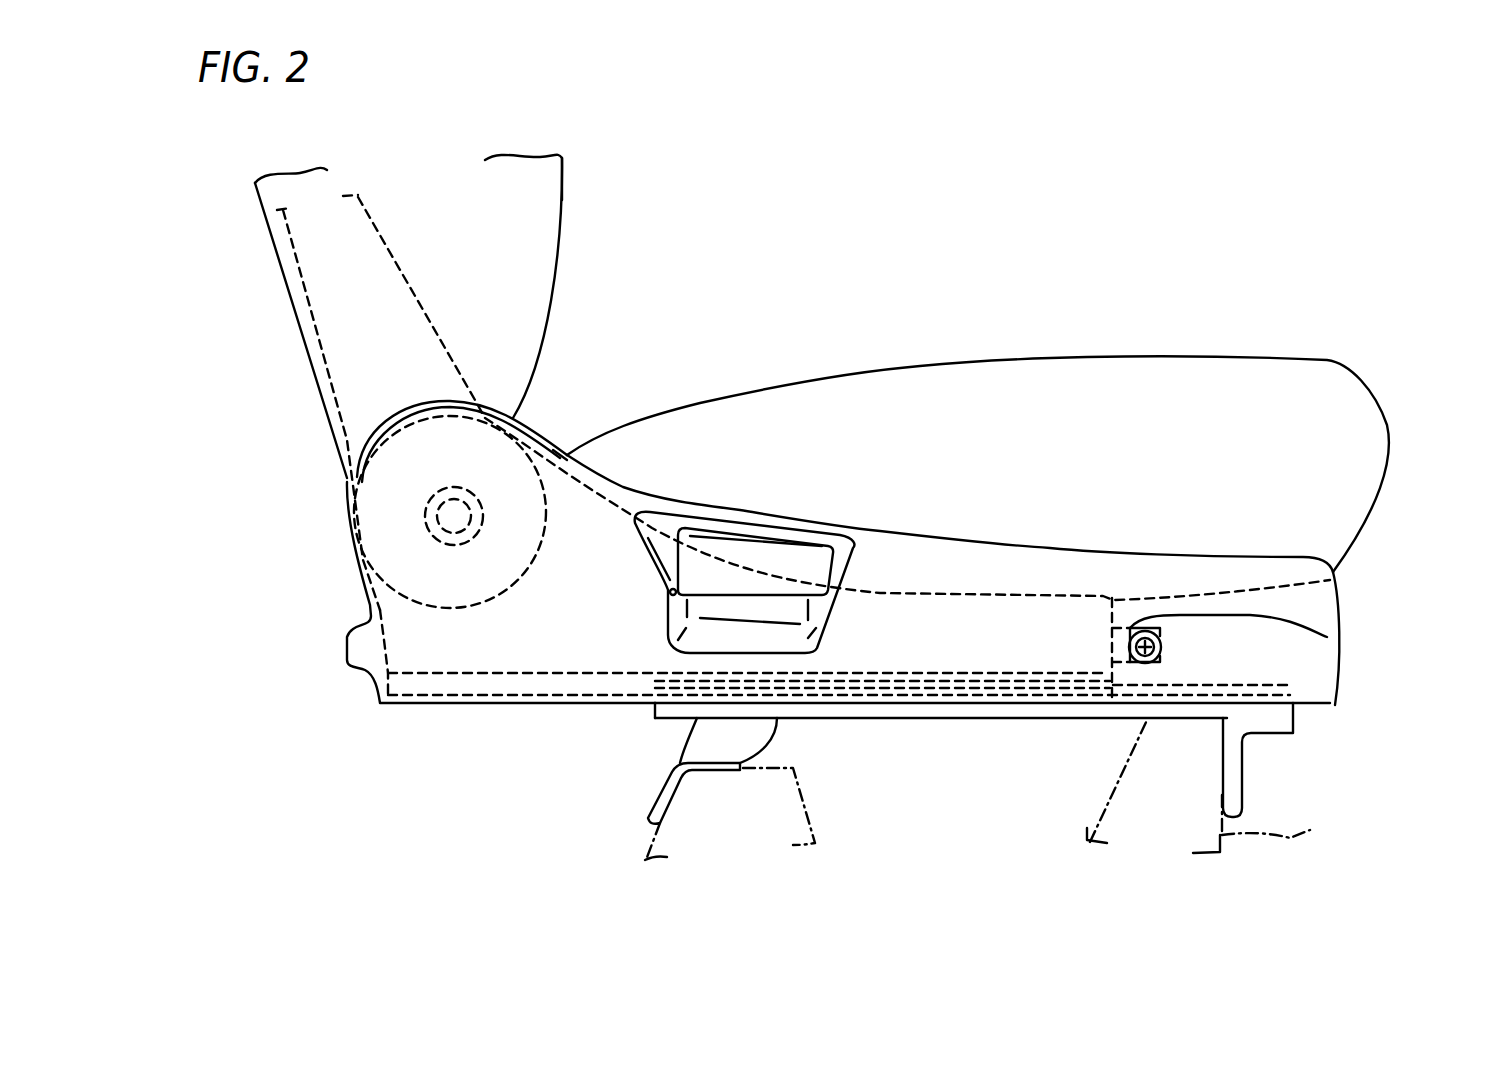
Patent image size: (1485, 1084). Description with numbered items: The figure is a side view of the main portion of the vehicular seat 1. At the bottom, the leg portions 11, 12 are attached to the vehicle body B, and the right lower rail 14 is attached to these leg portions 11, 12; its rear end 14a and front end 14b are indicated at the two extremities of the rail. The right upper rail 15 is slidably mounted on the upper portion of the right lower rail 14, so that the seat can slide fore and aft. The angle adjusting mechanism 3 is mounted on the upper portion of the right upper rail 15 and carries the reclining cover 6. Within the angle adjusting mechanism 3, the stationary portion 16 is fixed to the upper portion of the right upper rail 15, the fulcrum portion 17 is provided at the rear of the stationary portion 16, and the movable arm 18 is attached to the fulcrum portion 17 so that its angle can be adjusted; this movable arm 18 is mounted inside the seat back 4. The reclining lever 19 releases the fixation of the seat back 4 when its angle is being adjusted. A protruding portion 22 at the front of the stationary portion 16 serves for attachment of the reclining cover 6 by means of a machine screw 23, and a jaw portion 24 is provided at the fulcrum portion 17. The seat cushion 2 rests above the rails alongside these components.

The seat 1 is at (905, 222).
The seat cushion 2 is at (1105, 352).
The angle adjusting mechanism 3 is at (383, 642).
The seat back 4 is at (561, 200).
The reclining cover 6 is at (623, 485).
The leg portion 11 is at (1225, 768).
The leg portion 12 is at (650, 797).
The right lower rail 14 is at (963, 720).
The rear end of right lower rail 14a is at (656, 706).
The front end of right lower rail 14b is at (1293, 715).
The right upper rail 15 is at (563, 703).
The stationary portion 16 is at (375, 617).
The fulcrum portion 17 is at (440, 522).
The movable arm 18 is at (320, 353).
The reclining lever 19 is at (872, 540).
The protruding portion 22 is at (1335, 640).
The machine screw 23 is at (1144, 663).
The jaw portion 24 is at (430, 498).
The vehicle body B is at (1282, 830).